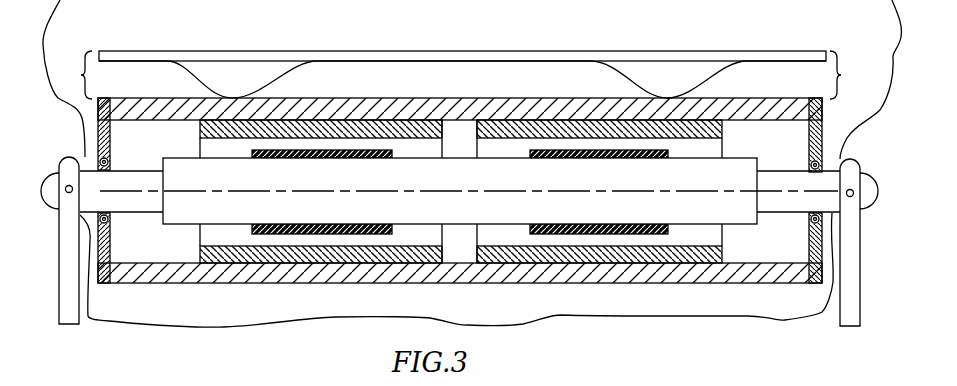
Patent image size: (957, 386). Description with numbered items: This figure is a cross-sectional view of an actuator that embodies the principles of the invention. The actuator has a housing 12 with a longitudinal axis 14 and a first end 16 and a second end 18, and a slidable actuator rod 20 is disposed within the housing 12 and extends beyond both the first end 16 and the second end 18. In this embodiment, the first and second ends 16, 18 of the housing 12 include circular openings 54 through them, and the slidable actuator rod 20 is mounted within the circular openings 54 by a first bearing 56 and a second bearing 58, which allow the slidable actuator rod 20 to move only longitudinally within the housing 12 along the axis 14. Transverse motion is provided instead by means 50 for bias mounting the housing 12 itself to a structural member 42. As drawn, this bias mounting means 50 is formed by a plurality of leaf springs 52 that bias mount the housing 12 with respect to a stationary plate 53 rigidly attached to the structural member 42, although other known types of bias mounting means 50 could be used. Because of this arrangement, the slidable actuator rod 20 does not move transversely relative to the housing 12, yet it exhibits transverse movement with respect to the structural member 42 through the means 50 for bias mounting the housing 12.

The housing 12 is at (458, 171).
The longitudinal axis 14 is at (355, 191).
The first end 16 is at (97, 131).
The second end 18 is at (822, 128).
The slidable actuator rod 20 is at (129, 170).
The structural member 42 is at (768, 30).
The means for bias mounting the housing 50 is at (462, 57).
The leaf springs 52 is at (206, 83).
The stationary plate 53 is at (390, 50).
The circular openings 54 is at (90, 158).
The first bearing 56 is at (110, 213).
The second bearing 58 is at (808, 164).